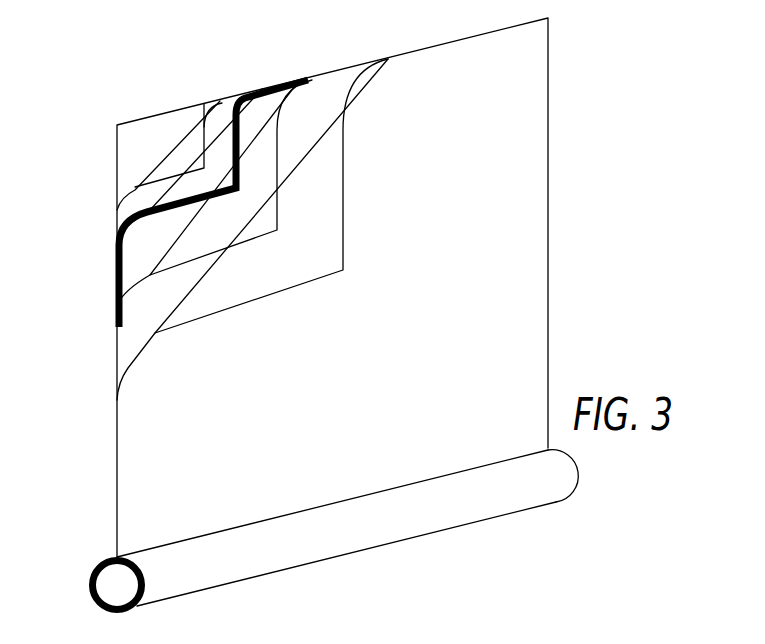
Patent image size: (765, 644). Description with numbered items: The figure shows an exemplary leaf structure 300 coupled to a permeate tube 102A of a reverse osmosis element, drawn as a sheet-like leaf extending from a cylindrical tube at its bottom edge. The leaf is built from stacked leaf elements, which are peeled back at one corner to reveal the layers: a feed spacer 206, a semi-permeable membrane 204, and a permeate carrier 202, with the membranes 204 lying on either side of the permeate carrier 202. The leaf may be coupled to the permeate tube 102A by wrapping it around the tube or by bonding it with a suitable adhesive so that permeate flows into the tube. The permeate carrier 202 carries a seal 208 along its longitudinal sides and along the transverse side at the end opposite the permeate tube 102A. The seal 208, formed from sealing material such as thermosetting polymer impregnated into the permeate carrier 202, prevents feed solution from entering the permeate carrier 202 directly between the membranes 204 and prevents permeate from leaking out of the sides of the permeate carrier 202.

The leaf structure 300 is at (603, 314).
The feed spacer 206 is at (133, 137).
The semi-permeable membrane 204 is at (223, 106).
The permeate carrier 202 is at (267, 105).
The seal 208 is at (115, 272).
The permeate tube 102A is at (92, 571).